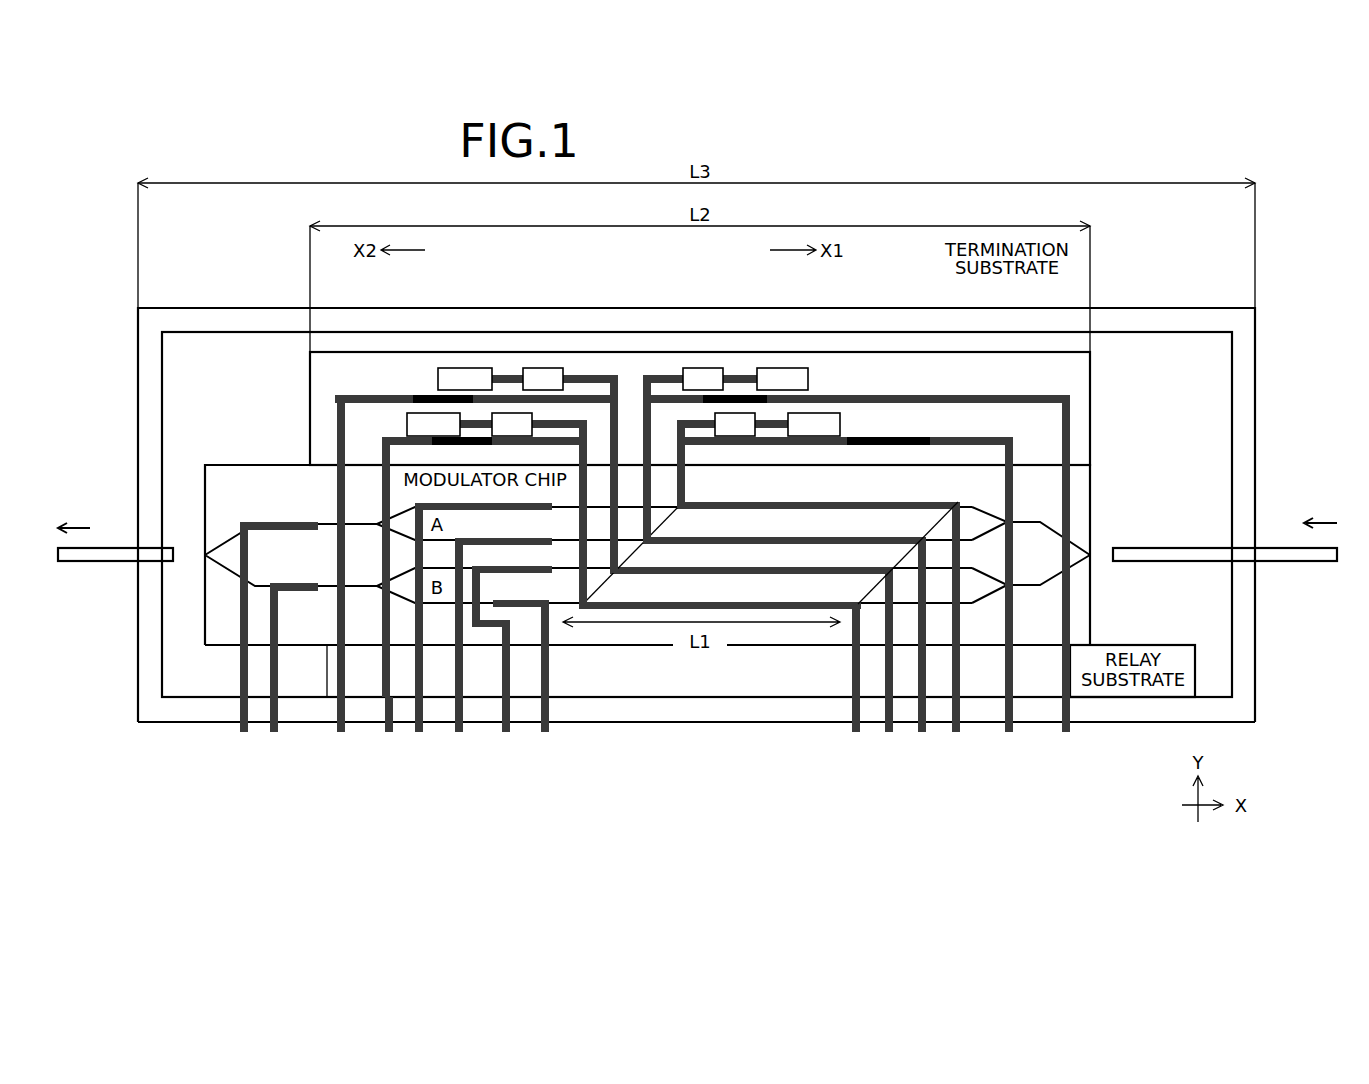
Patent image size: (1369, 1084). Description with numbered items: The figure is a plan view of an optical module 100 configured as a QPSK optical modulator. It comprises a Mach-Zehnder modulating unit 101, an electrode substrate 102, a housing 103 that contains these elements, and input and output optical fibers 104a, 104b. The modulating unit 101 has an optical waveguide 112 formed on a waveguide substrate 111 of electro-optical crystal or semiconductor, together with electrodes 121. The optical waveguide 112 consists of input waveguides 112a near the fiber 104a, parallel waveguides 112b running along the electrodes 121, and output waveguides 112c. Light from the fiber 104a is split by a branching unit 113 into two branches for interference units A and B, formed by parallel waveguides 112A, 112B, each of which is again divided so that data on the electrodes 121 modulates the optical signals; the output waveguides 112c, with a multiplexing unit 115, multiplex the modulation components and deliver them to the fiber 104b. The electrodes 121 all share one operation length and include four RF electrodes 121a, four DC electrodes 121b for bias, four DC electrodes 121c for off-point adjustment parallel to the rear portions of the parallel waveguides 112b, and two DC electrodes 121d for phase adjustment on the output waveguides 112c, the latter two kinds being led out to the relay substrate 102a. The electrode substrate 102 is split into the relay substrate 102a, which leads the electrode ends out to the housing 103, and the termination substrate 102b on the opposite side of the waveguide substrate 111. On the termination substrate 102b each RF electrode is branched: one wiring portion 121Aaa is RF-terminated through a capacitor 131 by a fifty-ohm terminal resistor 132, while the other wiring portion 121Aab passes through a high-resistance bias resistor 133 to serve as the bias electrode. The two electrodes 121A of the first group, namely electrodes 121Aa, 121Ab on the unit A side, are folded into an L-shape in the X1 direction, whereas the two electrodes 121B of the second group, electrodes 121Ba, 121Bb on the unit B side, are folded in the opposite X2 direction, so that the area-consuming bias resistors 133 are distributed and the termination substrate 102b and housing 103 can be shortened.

The optical module 100 is at (1128, 758).
The Mach-Zehnder modulating unit 101 is at (1114, 468).
The electrode substrate 102 is at (762, 487).
The relay substrate 102a is at (1165, 645).
The termination substrate 102b is at (1033, 360).
The housing 103 is at (750, 713).
The optical fiber 104a is at (1305, 561).
The optical fiber 104b is at (92, 561).
The waveguide substrate 111 is at (1080, 518).
The optical waveguide 112 is at (692, 616).
The input waveguides 112a is at (1038, 488).
The parallel waveguides 112b is at (838, 624).
The output waveguides 112c is at (375, 504).
The parallel waveguides 112A is at (541, 532).
The parallel waveguides 112B is at (630, 592).
The branching unit 113 is at (1090, 555).
The multiplexing unit 115 is at (205, 555).
The electrodes 121 is at (650, 794).
The RF electrodes 121a is at (845, 795).
The DC electrodes for bias 121b is at (333, 797).
The DC electrodes for off-point adjustment 121c is at (412, 797).
The DC electrodes for phase adjustment 121d is at (228, 797).
The electrodes of first group 121A is at (856, 488).
The electrodes of second group 121B is at (428, 488).
The electrode 121Aa is at (849, 530).
The electrode 121Ab is at (831, 386).
The wiring portion 121Aaa is at (771, 445).
The wiring portion 121Aab is at (980, 440).
The electrode 121Ba is at (360, 430).
The electrode 121Bb is at (405, 377).
The capacitor 131 is at (695, 368).
The terminal resistor 132 is at (780, 368).
The bias resistor 133 is at (740, 395).